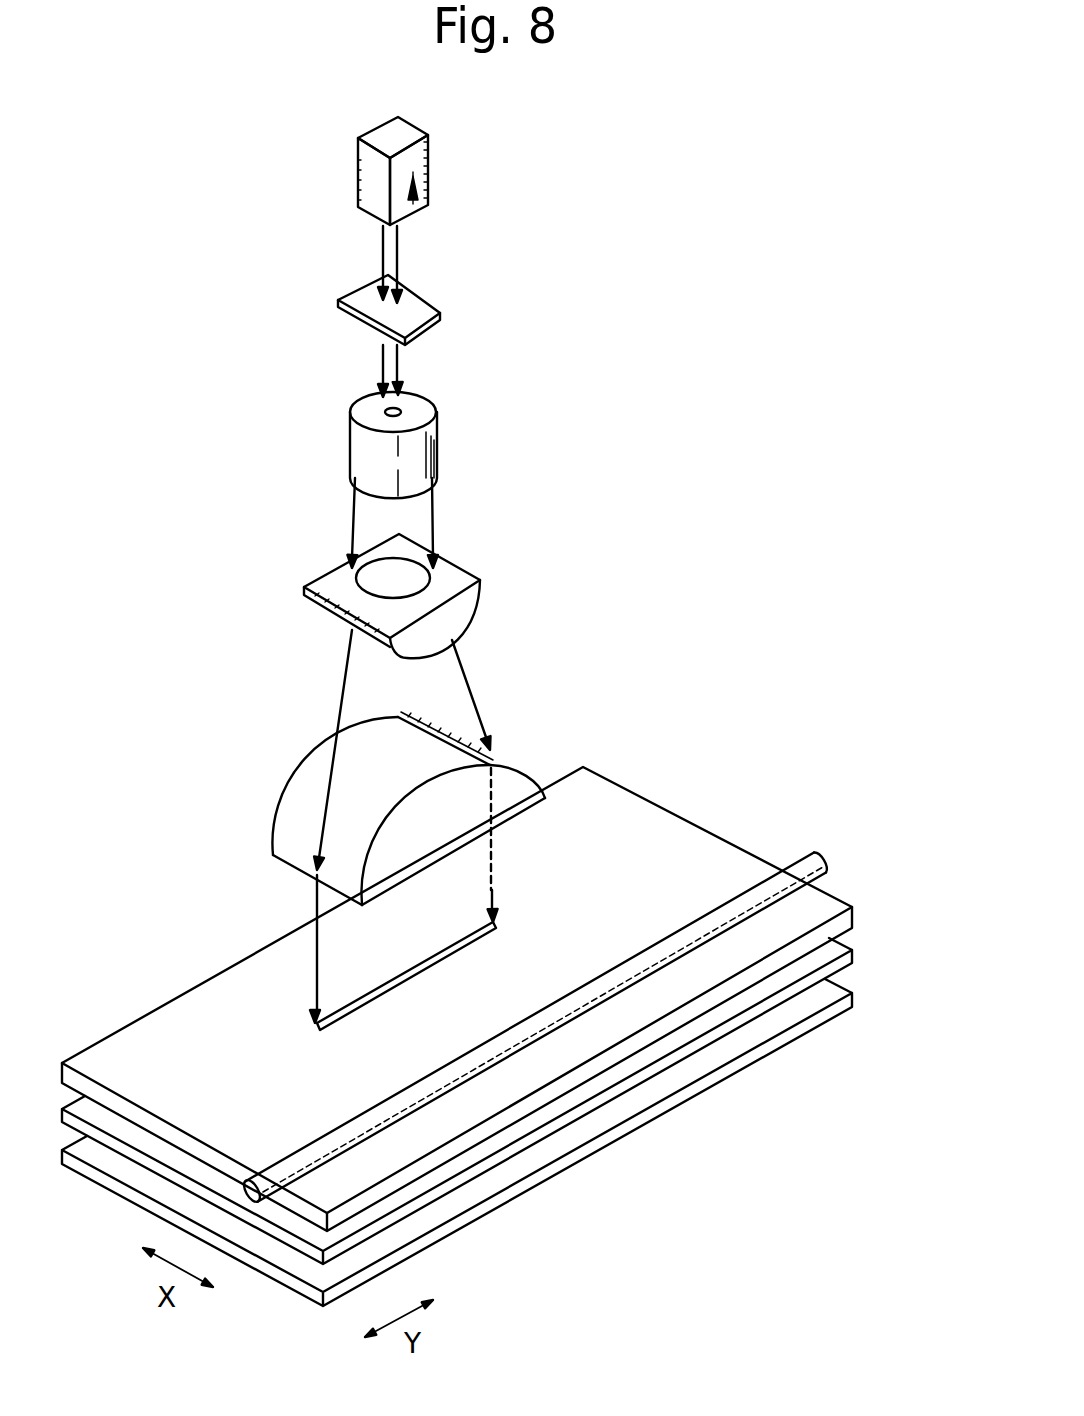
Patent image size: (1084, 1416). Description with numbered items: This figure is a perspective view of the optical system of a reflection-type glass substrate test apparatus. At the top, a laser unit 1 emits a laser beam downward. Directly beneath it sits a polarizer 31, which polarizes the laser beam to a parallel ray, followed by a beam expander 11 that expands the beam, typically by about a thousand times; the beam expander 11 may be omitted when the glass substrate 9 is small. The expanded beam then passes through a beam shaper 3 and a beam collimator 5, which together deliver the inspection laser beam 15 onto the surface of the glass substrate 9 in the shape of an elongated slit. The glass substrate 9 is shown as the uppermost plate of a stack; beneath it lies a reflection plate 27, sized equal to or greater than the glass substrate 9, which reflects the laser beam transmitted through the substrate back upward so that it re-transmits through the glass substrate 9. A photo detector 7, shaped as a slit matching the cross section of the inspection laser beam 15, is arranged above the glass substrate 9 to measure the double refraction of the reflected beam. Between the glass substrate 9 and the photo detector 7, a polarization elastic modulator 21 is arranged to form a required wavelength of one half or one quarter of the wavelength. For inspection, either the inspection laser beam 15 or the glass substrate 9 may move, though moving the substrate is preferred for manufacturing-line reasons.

The laser unit 1 is at (462, 152).
The polarizer 31 is at (464, 270).
The beam expander 11 is at (469, 426).
The beam shaper 3 is at (491, 560).
The beam collimator 5 is at (544, 712).
The photo detector 7 is at (818, 857).
The glass substrate 9 is at (853, 916).
The polarization elastic modulator 21 is at (853, 957).
The reflection plate 27 is at (853, 998).
The inspection laser beam 15 is at (443, 957).